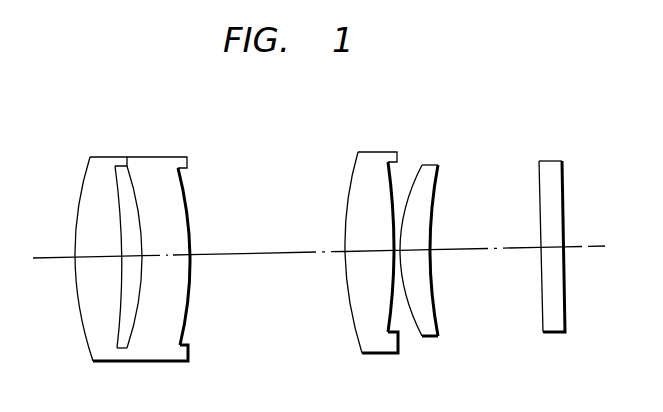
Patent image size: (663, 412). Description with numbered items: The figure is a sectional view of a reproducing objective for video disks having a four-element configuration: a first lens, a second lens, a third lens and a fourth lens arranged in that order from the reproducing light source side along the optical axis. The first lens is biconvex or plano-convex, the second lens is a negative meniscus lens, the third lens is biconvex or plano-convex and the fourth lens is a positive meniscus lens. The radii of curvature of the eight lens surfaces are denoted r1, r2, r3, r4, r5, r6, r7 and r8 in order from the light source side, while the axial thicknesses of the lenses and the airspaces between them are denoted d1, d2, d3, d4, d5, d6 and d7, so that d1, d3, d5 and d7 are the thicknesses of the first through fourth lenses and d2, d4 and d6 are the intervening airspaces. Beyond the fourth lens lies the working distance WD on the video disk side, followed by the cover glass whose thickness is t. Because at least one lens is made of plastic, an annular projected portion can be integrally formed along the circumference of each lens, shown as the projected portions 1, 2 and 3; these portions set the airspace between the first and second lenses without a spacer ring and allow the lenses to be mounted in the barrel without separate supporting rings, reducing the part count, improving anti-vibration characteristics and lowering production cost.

The annular projected portion 1 is at (124, 158).
The annular projected portion 2 is at (180, 159).
The annular projected portion 3 is at (393, 152).
The radius of curvature of first lens surface r1 is at (88, 333).
The radius of curvature of second lens surface r2 is at (116, 350).
The radius of curvature of third lens surface r3 is at (126, 350).
The radius of curvature of fourth lens surface r4 is at (184, 335).
The radius of curvature of fifth lens surface r5 is at (360, 333).
The radius of curvature of sixth lens surface r6 is at (387, 333).
The radius of curvature of seventh lens surface r7 is at (415, 337).
The radius of curvature of eighth lens surface r8 is at (436, 320).
The thickness of first lens d1 is at (100, 256).
The airspace between first and second lenses d2 is at (132, 257).
The thickness of second lens d3 is at (170, 255).
The airspace between second and third lenses d4 is at (258, 253).
The thickness of third lens d5 is at (372, 250).
The airspace between third and fourth lenses d6 is at (393, 262).
The thickness of fourth lens d7 is at (414, 249).
The working distance WD is at (462, 248).
The thickness of cover glass t is at (548, 246).